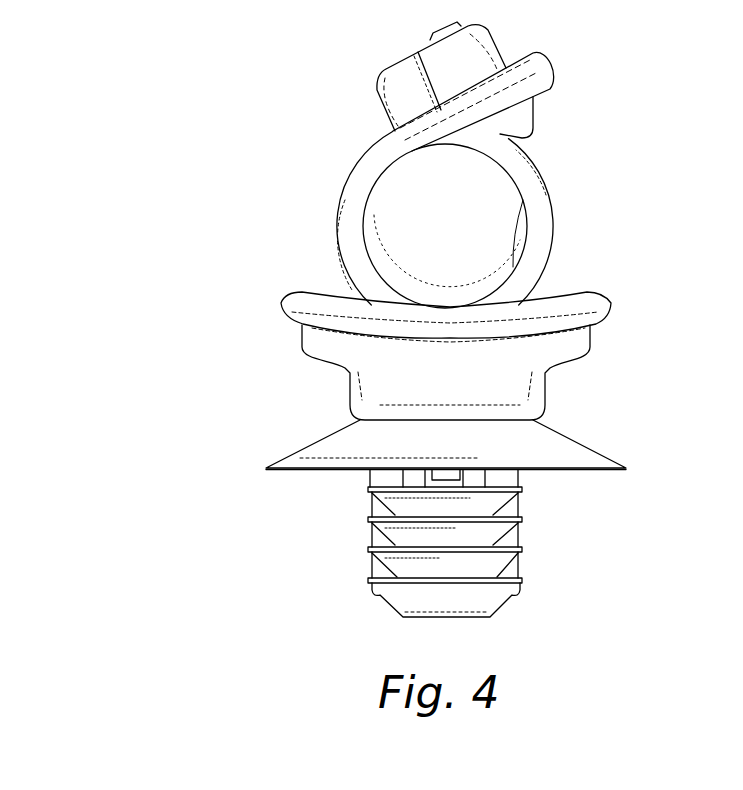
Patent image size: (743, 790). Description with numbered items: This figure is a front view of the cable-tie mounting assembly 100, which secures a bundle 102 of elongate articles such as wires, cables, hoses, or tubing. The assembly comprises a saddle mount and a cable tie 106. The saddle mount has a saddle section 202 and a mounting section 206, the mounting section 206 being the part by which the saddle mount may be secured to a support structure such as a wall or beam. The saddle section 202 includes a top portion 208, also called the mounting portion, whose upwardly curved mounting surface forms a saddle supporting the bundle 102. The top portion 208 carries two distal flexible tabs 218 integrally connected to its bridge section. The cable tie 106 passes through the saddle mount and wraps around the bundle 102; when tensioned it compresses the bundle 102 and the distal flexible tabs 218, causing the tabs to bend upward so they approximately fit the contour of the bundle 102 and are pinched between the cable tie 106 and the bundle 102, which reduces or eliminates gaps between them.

The cable-tie mounting assembly 100 is at (204, 104).
The bundle 102 is at (481, 160).
The cable tie 106 is at (337, 227).
The distal flexible tabs 218 is at (523, 241).
The saddle section 202 is at (662, 290).
The top portion 208 is at (278, 302).
The mounting section 206 is at (520, 563).